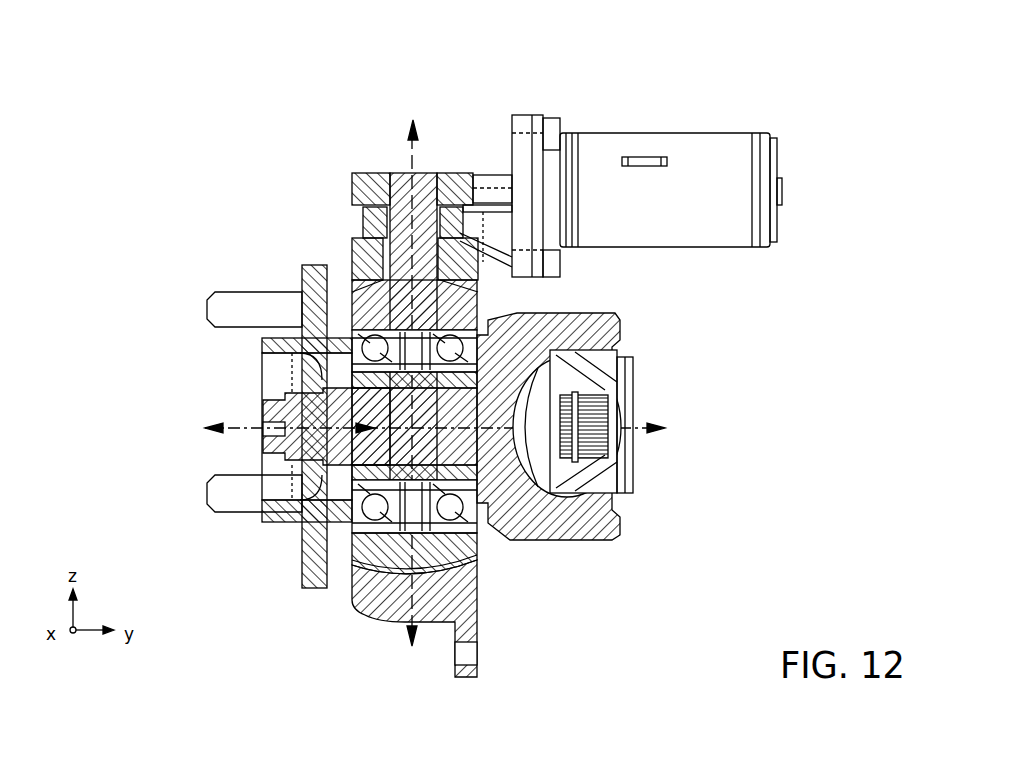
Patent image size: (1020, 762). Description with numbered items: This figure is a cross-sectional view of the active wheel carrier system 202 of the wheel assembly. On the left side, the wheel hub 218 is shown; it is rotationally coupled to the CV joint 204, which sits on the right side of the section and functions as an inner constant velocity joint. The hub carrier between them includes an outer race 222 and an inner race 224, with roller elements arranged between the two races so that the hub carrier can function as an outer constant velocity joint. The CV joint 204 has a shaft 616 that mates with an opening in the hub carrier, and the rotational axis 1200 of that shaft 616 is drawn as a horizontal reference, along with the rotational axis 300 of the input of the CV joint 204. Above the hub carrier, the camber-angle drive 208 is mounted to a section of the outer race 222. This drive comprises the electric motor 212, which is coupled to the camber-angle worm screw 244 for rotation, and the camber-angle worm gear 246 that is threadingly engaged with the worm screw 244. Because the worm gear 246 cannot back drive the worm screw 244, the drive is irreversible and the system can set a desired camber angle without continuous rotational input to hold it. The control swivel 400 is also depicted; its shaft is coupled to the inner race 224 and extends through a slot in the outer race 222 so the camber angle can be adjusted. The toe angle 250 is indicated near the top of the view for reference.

The active wheel carrier system 202 is at (168, 136).
The CV joint 204 is at (680, 356).
The camber-angle drive 208 is at (821, 156).
The electric motor 212 is at (689, 119).
The wheel hub 218 is at (174, 278).
The outer race 222 is at (330, 252).
The inner race 224 is at (488, 298).
The camber-angle worm screw 244 is at (488, 164).
The camber-angle worm gear 246 is at (494, 233).
The toe angle 250 is at (431, 135).
The rotational axis 300 is at (650, 431).
The control swivel 400 is at (437, 165).
The shaft 616 is at (234, 387).
The rotational axis 1200 is at (223, 417).